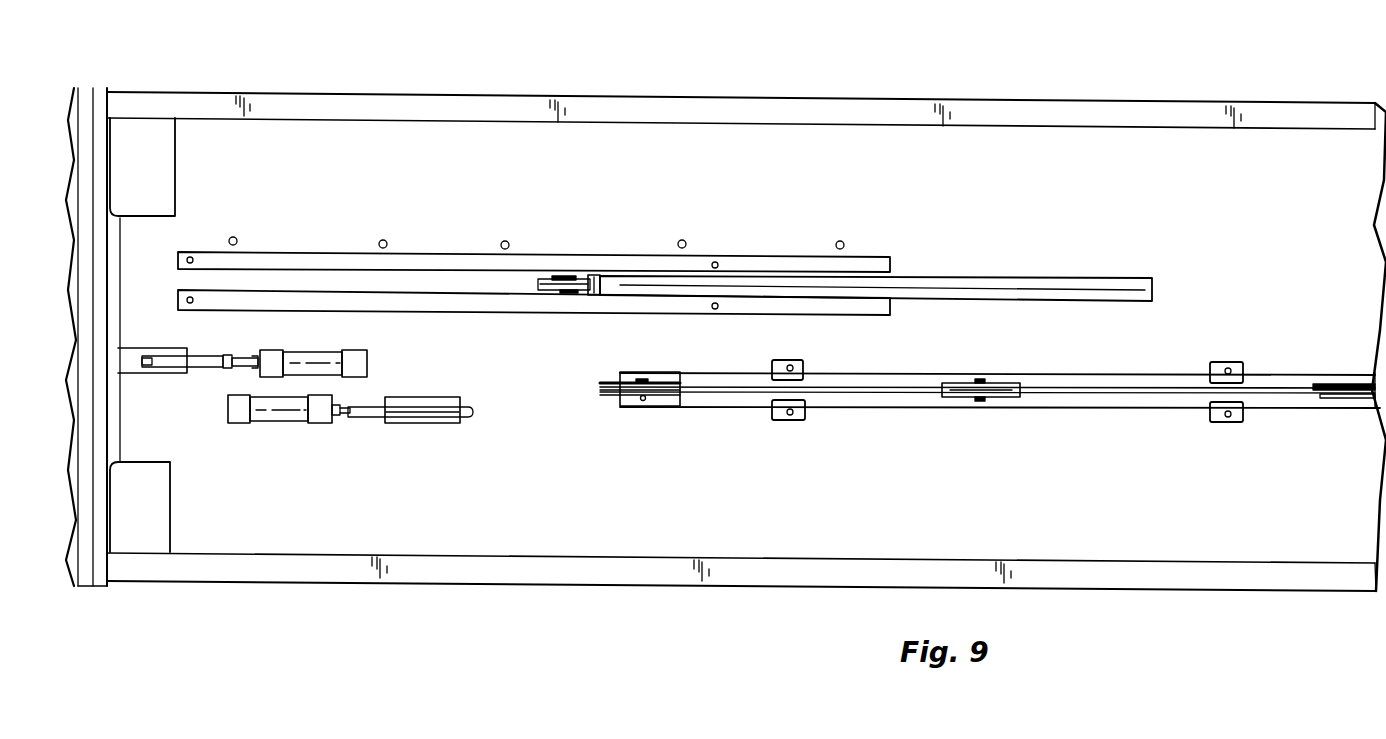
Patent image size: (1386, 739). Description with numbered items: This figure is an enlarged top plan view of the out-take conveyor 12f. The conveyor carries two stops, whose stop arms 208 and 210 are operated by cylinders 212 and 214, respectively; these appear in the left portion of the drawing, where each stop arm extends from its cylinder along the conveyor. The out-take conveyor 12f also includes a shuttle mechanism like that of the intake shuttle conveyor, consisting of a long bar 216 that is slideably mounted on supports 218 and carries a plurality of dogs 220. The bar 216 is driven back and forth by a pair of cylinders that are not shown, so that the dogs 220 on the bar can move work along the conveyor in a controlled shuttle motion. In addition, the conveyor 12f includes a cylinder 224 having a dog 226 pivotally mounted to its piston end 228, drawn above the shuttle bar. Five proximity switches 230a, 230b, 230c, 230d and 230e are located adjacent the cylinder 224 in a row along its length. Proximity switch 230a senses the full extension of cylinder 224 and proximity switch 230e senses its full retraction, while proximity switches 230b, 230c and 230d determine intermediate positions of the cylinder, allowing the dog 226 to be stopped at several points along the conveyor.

The out-take conveyor 12f is at (608, 90).
The stop arm 208 is at (208, 346).
The stop arm 210 is at (410, 413).
The cylinder 212 is at (330, 354).
The cylinder 214 is at (273, 413).
The bar 216 is at (1077, 408).
The supports 218 is at (805, 368).
The dogs 220 is at (660, 394).
The cylinder 224 is at (1012, 238).
The dog 226 is at (574, 278).
The piston end 228 is at (598, 294).
The proximity switch 230a is at (258, 226).
The proximity switch 230b is at (388, 228).
The proximity switch 230c is at (523, 232).
The proximity switch 230d is at (690, 228).
The proximity switch 230e is at (850, 232).